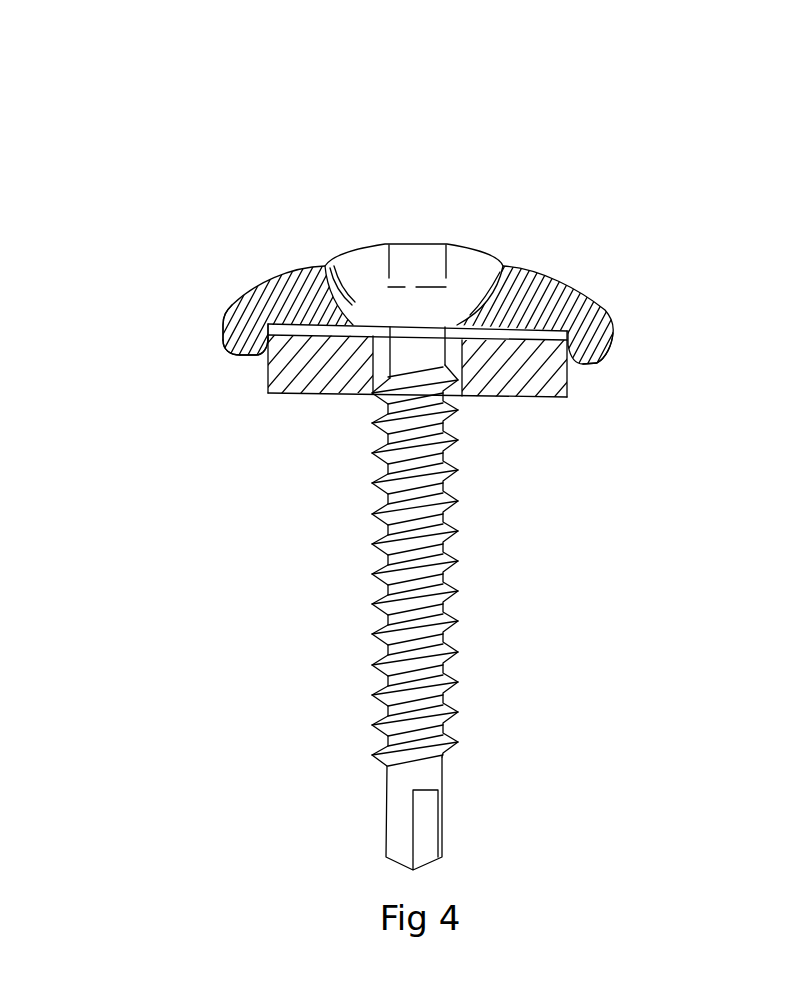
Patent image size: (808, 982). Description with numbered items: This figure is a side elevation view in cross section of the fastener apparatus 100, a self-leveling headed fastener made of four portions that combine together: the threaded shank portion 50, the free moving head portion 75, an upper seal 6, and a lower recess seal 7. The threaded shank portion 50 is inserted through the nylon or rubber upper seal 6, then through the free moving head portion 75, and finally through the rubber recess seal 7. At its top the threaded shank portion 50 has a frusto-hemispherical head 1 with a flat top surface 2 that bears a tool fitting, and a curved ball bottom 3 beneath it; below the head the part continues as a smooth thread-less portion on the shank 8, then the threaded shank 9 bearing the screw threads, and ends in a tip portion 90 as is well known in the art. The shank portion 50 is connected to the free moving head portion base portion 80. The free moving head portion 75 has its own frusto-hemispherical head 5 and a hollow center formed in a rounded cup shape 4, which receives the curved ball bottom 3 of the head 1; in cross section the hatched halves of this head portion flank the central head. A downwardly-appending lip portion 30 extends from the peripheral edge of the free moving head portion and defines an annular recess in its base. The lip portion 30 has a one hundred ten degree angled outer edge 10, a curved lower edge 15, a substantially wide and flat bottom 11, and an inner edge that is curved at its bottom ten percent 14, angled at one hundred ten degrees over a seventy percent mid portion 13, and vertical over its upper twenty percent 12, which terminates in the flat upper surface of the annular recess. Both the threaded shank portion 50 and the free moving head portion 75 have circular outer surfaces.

The fastener apparatus 100 is at (192, 133).
The frusto-hemispherical head 1 is at (474, 246).
The flat top surface 2 is at (414, 243).
The curved ball bottom 3 is at (325, 266).
The rounded cup shape 4 is at (317, 355).
The upper seal 6 is at (342, 285).
The free moving head portion base portion 80 is at (467, 280).
The free moving head portion 75 is at (545, 302).
The curved lower edge 15 is at (603, 369).
The curved bottom portion of inner edge 14 is at (575, 363).
The angled mid portion of inner edge 13 is at (568, 395).
The frusto-hemispherical head 5 is at (268, 324).
The angled outer edge 10 is at (222, 333).
The lip portion 30 is at (248, 334).
The flat bottom 11 is at (245, 355).
The vertical upper portion of inner edge 12 is at (268, 357).
The recess seal 7 is at (308, 387).
The smooth thread-less portion of the shank 8 is at (420, 357).
The threaded shank 9 is at (458, 592).
The threaded shank portion 50 is at (372, 633).
The tip portion 90 is at (413, 780).